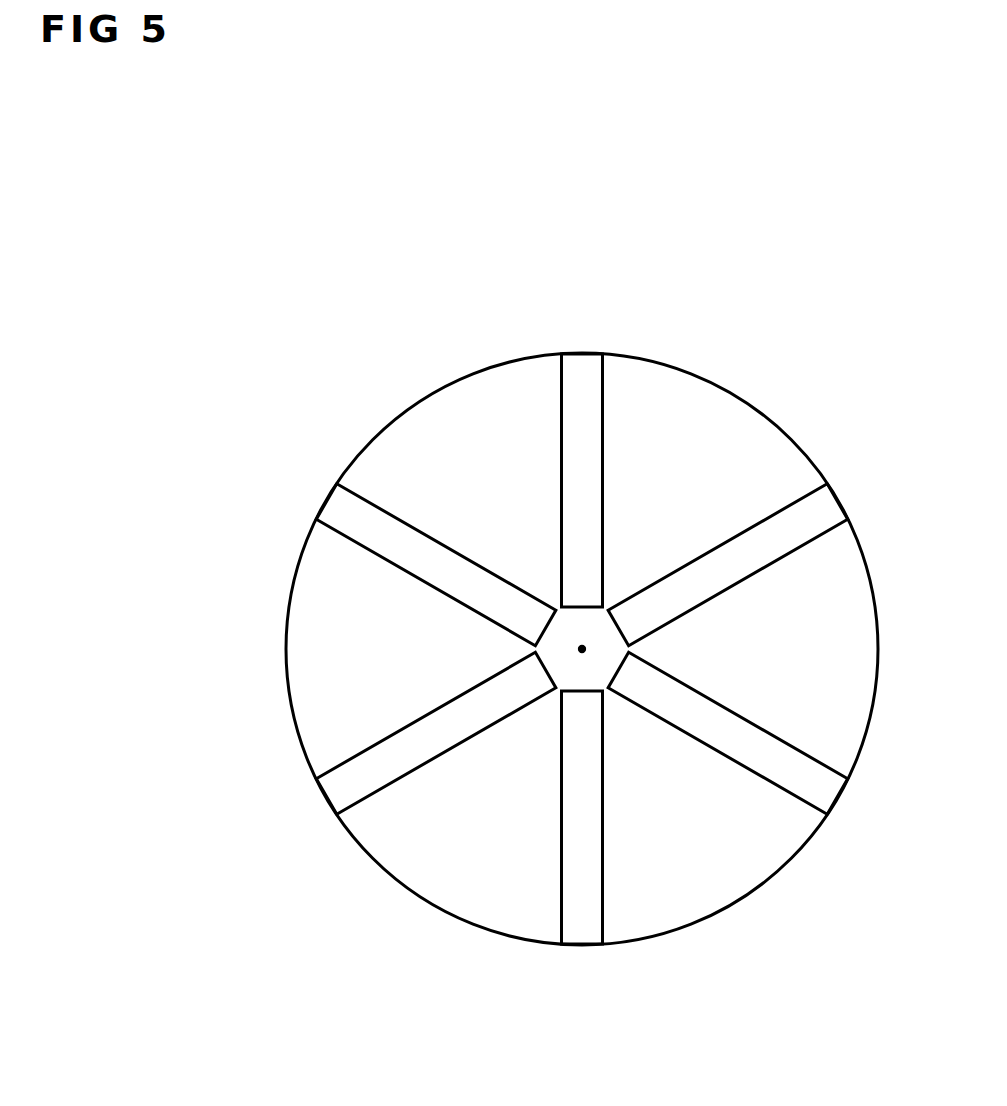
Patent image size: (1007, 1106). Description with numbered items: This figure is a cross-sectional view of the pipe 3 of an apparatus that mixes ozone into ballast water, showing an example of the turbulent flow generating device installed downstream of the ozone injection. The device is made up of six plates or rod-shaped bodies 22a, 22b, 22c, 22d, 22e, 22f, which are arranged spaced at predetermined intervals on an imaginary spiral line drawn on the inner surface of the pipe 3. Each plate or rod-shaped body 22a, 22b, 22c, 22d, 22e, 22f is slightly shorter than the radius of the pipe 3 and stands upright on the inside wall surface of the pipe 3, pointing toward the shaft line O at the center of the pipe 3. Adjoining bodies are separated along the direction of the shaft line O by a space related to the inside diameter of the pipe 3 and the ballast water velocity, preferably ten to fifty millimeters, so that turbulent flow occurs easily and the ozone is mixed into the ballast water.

The pipe 3 is at (742, 398).
The plate or rod-shaped body 22a is at (602, 387).
The plate or rod-shaped body 22b is at (818, 540).
The plate or rod-shaped body 22c is at (802, 806).
The plate or rod-shaped body 22d is at (561, 915).
The plate or rod-shaped body 22e is at (340, 766).
The plate or rod-shaped body 22f is at (361, 496).
The shaft line O is at (697, 648).